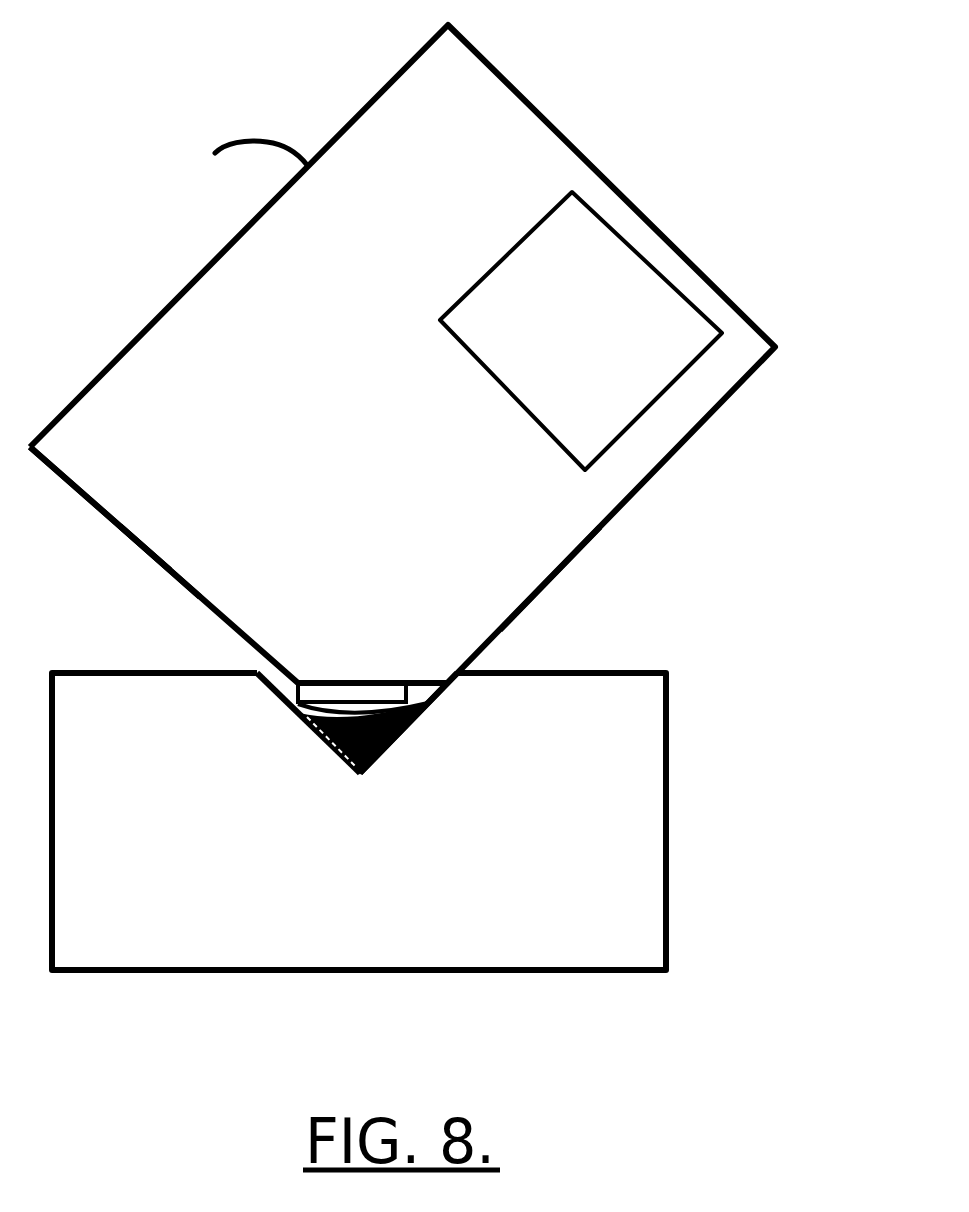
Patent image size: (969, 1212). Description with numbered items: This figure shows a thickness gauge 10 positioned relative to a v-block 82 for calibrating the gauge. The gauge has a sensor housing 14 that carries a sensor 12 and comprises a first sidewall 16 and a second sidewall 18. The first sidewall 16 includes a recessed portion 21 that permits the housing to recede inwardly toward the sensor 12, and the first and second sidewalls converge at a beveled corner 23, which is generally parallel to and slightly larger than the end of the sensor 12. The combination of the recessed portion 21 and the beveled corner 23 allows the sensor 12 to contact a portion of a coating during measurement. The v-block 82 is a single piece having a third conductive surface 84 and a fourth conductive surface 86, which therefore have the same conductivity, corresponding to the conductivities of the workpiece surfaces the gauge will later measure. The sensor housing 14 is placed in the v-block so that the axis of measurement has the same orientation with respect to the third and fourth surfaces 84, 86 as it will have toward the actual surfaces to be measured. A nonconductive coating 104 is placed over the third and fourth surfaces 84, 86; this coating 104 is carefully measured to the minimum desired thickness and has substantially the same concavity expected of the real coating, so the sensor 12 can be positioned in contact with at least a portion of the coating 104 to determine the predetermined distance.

The thickness gauge 10 is at (697, 125).
The sensor 12 is at (360, 697).
The sensor housing 14 is at (402, 399).
The first sidewall 16 is at (123, 537).
The second sidewall 18 is at (543, 583).
The recessed portion 21 is at (167, 568).
The beveled corner 23 is at (407, 683).
The v-block 82 is at (617, 948).
The third conductive surface 84 is at (297, 715).
The fourth conductive surface 86 is at (403, 732).
The nonconductive coating 104 is at (332, 750).